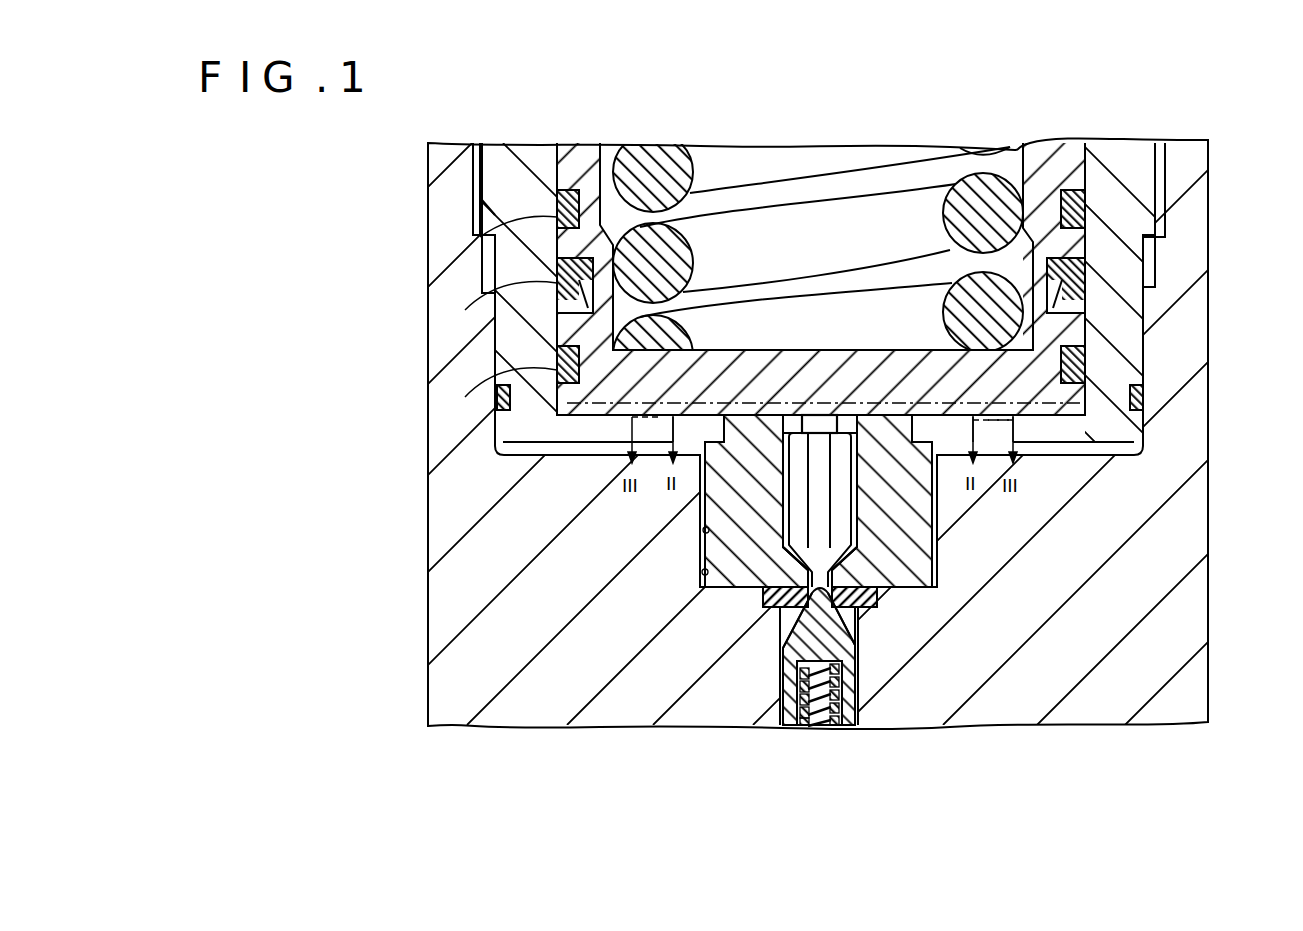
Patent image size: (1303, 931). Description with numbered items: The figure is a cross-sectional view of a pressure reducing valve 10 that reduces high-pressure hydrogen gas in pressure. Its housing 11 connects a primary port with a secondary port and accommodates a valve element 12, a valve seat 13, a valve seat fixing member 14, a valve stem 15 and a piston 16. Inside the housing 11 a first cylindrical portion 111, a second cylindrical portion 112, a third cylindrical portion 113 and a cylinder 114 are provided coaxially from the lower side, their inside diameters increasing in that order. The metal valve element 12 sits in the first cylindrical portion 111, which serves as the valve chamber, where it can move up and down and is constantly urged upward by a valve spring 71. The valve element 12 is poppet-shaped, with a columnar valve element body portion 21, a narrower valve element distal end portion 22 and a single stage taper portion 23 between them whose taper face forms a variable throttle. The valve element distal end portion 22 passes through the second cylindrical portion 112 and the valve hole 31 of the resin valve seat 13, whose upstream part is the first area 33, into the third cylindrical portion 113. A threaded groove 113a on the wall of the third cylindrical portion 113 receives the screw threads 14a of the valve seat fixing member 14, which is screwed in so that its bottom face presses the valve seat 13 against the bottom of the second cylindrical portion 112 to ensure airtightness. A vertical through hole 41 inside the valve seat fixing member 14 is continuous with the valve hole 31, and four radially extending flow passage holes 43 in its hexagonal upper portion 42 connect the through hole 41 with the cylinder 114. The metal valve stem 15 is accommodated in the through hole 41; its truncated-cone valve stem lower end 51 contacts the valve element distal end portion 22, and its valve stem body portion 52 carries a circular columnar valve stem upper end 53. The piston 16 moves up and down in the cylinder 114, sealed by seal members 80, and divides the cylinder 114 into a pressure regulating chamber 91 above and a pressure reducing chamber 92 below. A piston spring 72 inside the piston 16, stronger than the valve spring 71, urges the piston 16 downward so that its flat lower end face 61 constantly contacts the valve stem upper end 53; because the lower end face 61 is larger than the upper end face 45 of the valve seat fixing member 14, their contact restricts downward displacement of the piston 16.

The pressure reducing valve 10 is at (1190, 109).
The housing 11 is at (1210, 215).
The valve element 12 is at (850, 706).
The valve seat 13 is at (880, 598).
The valve seat fixing member 14 is at (933, 555).
The screw threads 14a is at (937, 522).
The valve stem 15 is at (857, 490).
The piston 16 is at (1087, 313).
The valve element body portion 21 is at (856, 660).
The valve element distal end portion 22 is at (840, 578).
The single stage taper portion 23 is at (850, 630).
The valve hole 31 is at (763, 598).
The first area 33 is at (790, 640).
The through hole 41 is at (835, 415).
The upper portion 42 is at (913, 438).
The flow passage holes 43 is at (724, 428).
The upper end face 45 is at (893, 414).
The valve stem lower end 51 is at (797, 578).
The valve stem body portion 52 is at (783, 495).
The valve stem upper end 53 is at (800, 415).
The lower end face 61 is at (1013, 424).
The valve spring 71 is at (820, 727).
The piston spring 72 is at (815, 157).
The seal members 80 is at (557, 225).
The pressure regulating chamber 91 is at (1018, 160).
The pressure reducing chamber 92 is at (1077, 450).
The first cylindrical portion 111 is at (784, 690).
The second cylindrical portion 112 is at (763, 608).
The third cylindrical portion 113 is at (702, 571).
The threaded groove 113a is at (703, 533).
The cylinder 114 is at (498, 458).